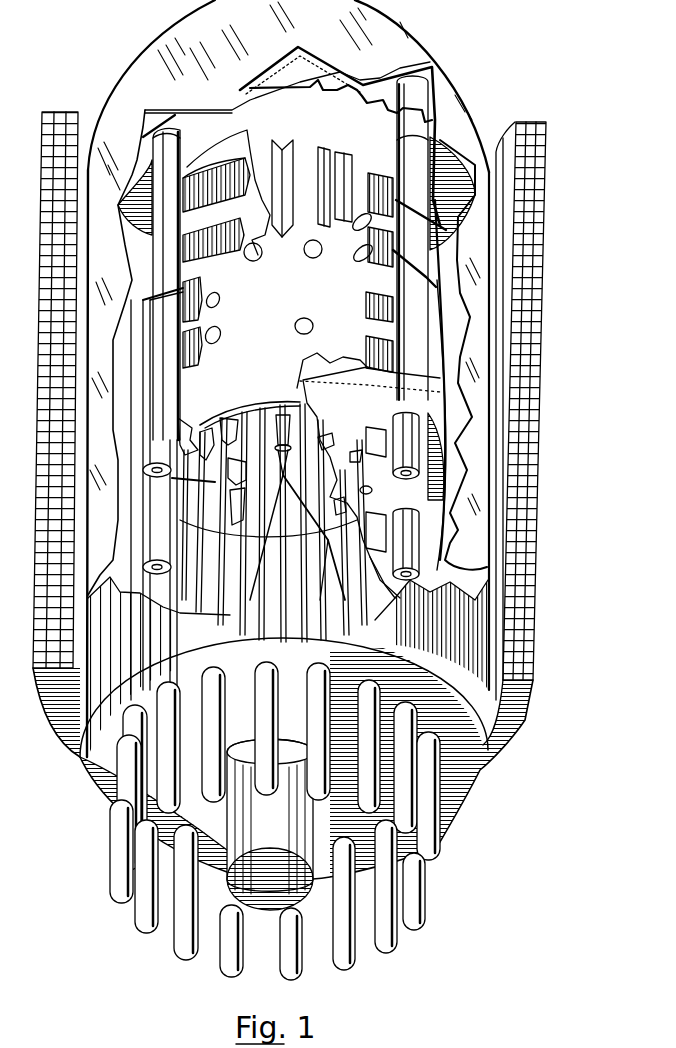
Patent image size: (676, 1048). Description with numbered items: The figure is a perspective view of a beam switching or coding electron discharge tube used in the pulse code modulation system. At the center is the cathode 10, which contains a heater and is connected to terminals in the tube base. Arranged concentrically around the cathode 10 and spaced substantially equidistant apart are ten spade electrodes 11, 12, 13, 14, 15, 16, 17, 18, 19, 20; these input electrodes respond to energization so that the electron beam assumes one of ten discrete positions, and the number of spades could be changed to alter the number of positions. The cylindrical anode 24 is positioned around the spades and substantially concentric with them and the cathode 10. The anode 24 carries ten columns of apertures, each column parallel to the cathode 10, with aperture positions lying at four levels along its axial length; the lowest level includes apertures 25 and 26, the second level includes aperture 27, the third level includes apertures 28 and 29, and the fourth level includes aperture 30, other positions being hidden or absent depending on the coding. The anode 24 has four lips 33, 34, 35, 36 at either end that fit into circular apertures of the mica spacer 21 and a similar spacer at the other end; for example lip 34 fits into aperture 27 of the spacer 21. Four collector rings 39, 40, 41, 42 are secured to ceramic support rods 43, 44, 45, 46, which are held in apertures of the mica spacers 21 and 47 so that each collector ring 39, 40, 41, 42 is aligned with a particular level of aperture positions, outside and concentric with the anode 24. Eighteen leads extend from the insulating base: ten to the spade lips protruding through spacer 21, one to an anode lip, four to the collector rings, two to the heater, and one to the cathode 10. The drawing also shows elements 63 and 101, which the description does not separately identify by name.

The cathode 10 is at (297, 210).
The spade electrode 11 is at (205, 430).
The spade electrode 12 is at (226, 420).
The spade electrode 13 is at (282, 413).
The spade electrode 14 is at (330, 440).
The spade electrode 15 is at (352, 456).
The spade electrode 16 is at (372, 490).
The spade electrode 17 is at (336, 506).
The spade electrode 18 is at (292, 527).
The spade electrode 19 is at (235, 528).
The spade electrode 20 is at (242, 466).
The mica spacer 21 is at (297, 388).
The anode 24 is at (251, 142).
The aperture 25 is at (220, 340).
The aperture 26 is at (296, 322).
The aperture 27 is at (228, 296).
The aperture 28 is at (258, 258).
The aperture 29 is at (310, 256).
The aperture 30 is at (355, 232).
The lip 33 is at (184, 425).
The lip 34 is at (374, 456).
The lip 35 is at (372, 552).
The lip 36 is at (215, 481).
The collector ring 39 is at (366, 348).
The collector ring 40 is at (366, 303).
The collector ring 41 is at (226, 233).
The collector ring 42 is at (238, 168).
The ceramic support rod 43 is at (172, 145).
The ceramic support rod 44 is at (405, 148).
The ceramic support rod 45 is at (150, 518).
The ceramic support rod 46 is at (415, 518).
The mica spacer 47 is at (292, 95).
The outer envelope 63 is at (538, 520).
The base member 101 is at (380, 580).